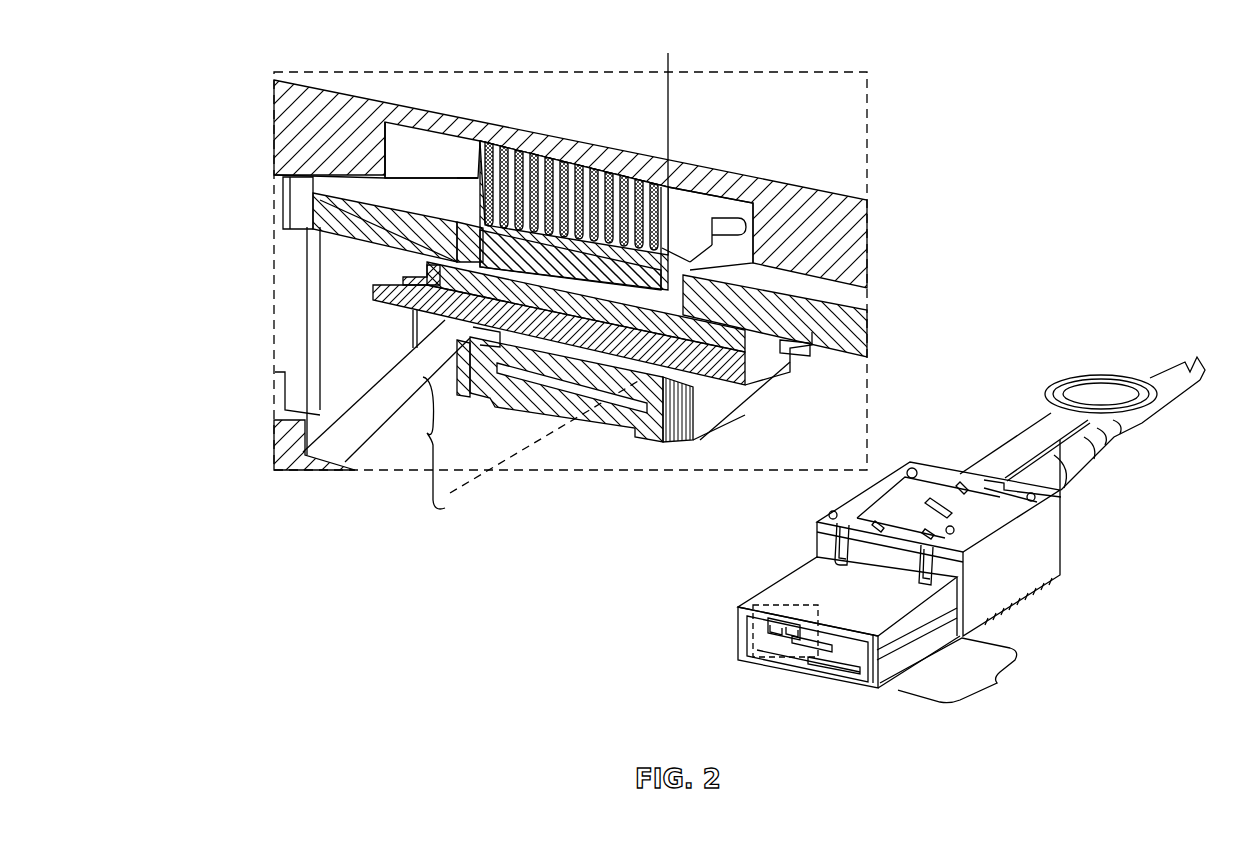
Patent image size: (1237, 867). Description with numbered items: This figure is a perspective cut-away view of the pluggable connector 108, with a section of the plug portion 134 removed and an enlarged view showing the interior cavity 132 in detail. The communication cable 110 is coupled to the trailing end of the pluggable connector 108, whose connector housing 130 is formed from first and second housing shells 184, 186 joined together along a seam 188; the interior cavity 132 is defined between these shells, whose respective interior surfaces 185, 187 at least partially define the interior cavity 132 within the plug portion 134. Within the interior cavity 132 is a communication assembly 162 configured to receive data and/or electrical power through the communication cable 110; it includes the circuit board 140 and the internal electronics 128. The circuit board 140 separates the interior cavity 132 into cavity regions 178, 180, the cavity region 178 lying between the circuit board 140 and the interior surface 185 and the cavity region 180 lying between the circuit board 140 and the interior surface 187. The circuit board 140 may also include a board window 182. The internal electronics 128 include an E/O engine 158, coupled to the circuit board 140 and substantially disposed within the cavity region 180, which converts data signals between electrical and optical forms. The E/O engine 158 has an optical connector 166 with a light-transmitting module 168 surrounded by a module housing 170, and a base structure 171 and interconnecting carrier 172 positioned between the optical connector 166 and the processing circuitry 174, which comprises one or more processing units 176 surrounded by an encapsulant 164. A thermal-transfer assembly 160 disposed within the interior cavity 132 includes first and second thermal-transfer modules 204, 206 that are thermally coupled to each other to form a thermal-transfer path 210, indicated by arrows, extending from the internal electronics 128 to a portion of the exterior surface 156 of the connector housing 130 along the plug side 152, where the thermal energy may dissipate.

The pluggable connector 108 is at (835, 90).
The communication cable 110 is at (1142, 420).
The internal electronics 128 is at (432, 322).
The connector housing 130 is at (866, 162).
The interior cavity 132 is at (352, 360).
The plug portion 134 is at (960, 671).
The circuit board 140 is at (857, 332).
The plug side 152 is at (683, 88).
The exterior surface 156 is at (595, 103).
The E/O engine 158 is at (407, 443).
The thermal-transfer assembly 160 is at (686, 226).
The communication assembly 162 is at (748, 423).
The encapsulant 164 is at (740, 290).
The optical connector 166 is at (652, 455).
The light-transmitting module 168 is at (600, 372).
The module housing 170 is at (622, 417).
The base structure 171 is at (790, 350).
The interconnecting carrier 172 is at (693, 390).
The processing circuitry 174 is at (468, 256).
The processing units 176 is at (355, 352).
The cavity region 178 is at (405, 150).
The cavity region 180 is at (347, 270).
The board window 182 is at (725, 230).
The first housing shell 184 is at (990, 517).
The interior surface 185 is at (458, 143).
The second housing shell 186 is at (1032, 572).
The interior surface 187 is at (760, 650).
The seam 188 is at (730, 632).
The first thermal-transfer module 204 is at (645, 370).
The second thermal-transfer module 206 is at (668, 187).
The thermal-transfer path 210 is at (616, 250).